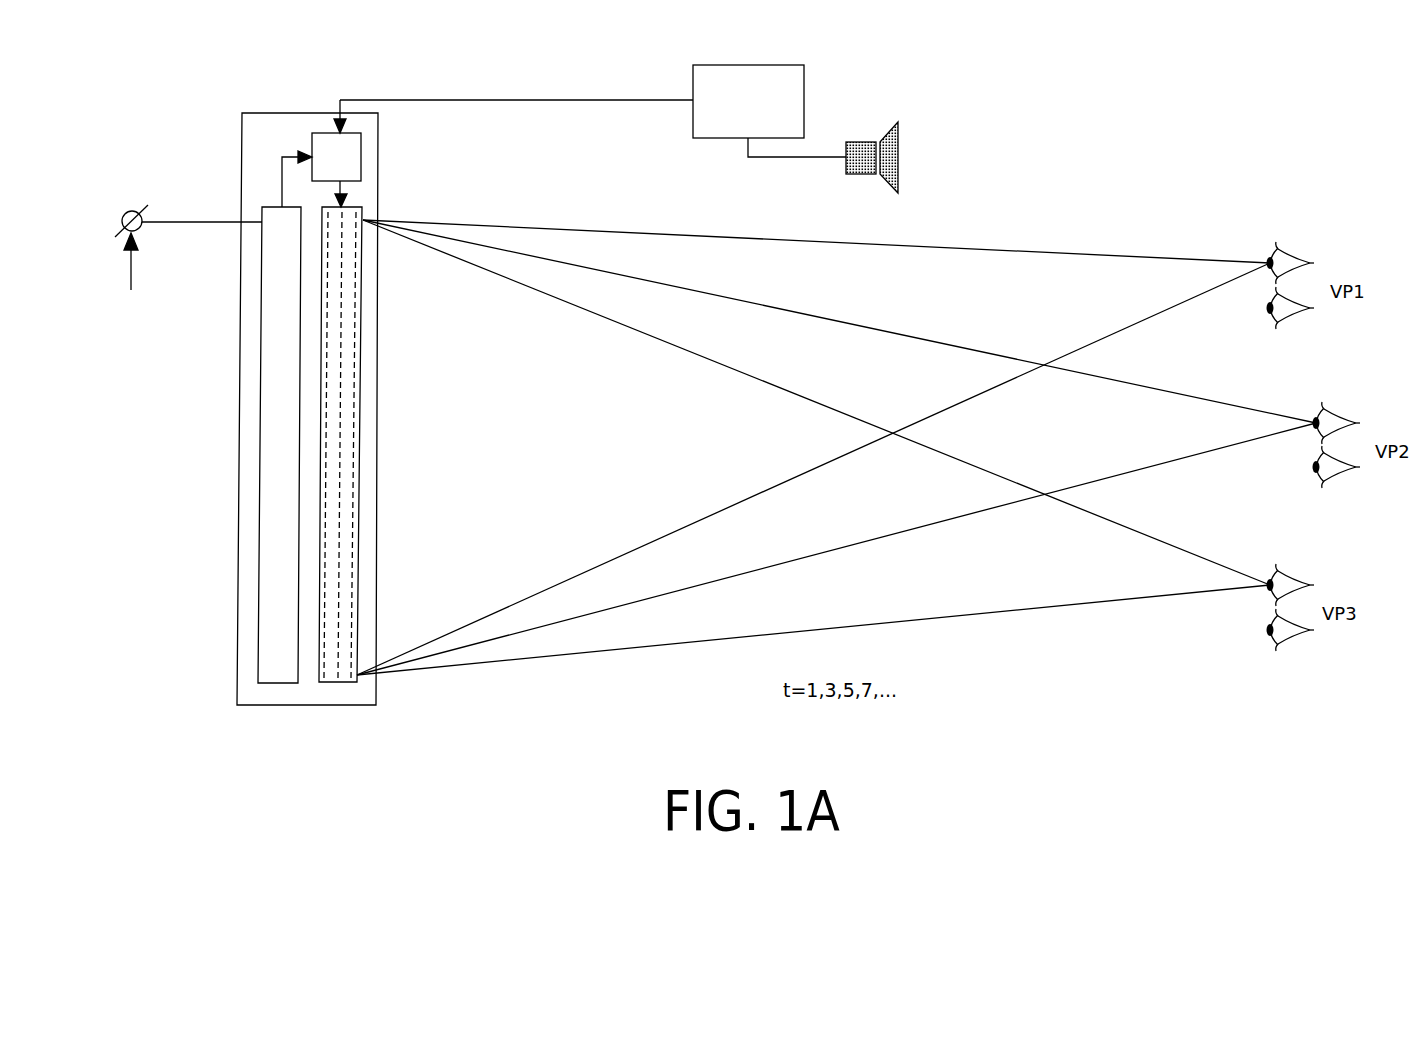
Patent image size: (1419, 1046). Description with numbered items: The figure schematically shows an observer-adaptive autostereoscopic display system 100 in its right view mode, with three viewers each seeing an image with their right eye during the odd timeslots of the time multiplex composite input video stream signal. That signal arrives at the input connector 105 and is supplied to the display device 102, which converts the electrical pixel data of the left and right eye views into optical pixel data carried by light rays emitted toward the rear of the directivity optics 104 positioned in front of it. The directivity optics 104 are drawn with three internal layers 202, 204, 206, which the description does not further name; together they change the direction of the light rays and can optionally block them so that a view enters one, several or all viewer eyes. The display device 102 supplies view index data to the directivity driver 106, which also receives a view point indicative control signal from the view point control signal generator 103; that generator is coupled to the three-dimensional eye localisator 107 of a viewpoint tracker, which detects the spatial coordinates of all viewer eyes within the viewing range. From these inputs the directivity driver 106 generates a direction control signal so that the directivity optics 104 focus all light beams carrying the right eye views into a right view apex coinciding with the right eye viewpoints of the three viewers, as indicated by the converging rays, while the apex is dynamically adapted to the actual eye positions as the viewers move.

The observer-adaptive autostereoscopic display system 100 is at (268, 112).
The display device 102 is at (258, 659).
The view point control signal generator 103 is at (593, 111).
The directivity optics 104 is at (363, 300).
The input connector 105 is at (124, 213).
The directivity driver 106 is at (361, 158).
The 3D eye localisator 107 is at (898, 158).
The first panel layer 202 is at (322, 683).
The second panel layer 204 is at (343, 683).
The third panel layer 206 is at (355, 683).